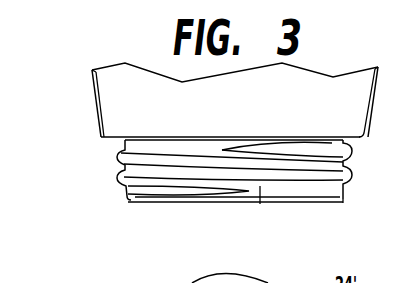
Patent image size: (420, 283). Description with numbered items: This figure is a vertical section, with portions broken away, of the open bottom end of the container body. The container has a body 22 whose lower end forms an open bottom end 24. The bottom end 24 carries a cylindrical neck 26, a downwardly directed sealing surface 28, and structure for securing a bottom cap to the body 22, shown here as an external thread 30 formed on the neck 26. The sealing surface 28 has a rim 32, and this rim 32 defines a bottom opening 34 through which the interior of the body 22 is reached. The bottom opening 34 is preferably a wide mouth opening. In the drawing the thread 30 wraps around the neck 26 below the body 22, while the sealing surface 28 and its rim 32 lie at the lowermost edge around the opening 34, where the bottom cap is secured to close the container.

The body 22 is at (95, 88).
The open bottom end 24 is at (100, 137).
The cylindrical neck 26 is at (118, 167).
The sealing surface 28 is at (128, 201).
The external thread 30 is at (354, 154).
The rim 32 is at (337, 203).
The bottom opening 34 is at (260, 205).